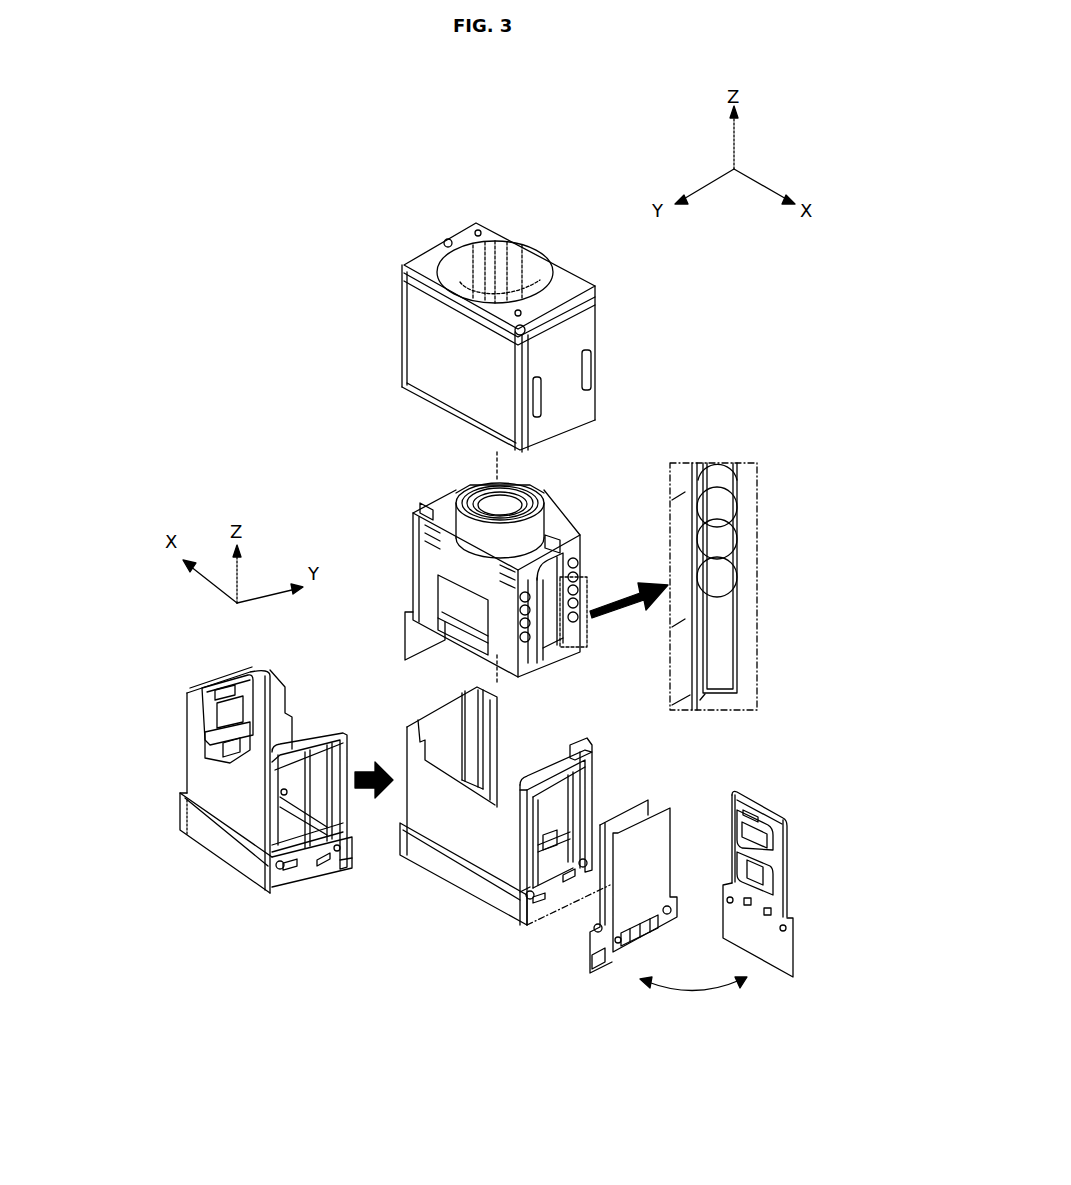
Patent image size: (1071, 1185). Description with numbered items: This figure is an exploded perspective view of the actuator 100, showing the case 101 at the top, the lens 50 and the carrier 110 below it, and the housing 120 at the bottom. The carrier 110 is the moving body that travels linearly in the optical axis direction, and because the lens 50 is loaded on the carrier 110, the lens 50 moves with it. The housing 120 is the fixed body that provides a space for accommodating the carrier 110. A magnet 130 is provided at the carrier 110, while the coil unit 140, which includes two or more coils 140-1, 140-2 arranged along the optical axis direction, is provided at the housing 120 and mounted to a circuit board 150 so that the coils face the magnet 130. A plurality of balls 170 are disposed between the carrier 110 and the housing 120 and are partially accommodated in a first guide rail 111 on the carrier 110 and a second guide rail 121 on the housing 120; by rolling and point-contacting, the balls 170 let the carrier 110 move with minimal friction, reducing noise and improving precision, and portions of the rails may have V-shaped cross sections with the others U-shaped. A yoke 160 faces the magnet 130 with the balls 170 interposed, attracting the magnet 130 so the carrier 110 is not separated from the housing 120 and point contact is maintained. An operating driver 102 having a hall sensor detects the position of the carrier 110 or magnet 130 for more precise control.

The actuator 100 is at (325, 210).
The case 101 is at (435, 388).
The carrier 110 is at (428, 578).
The lens 50 is at (513, 493).
The magnet 130 is at (557, 637).
The first guide rail 111 is at (715, 633).
The balls 170 is at (720, 538).
The housing 120 is at (253, 837).
The second guide rail 121 is at (210, 693).
The coil unit 140 is at (114, 712).
The coil 140-1 is at (210, 718).
The coil 140-2 is at (217, 747).
The circuit board 150 is at (192, 840).
The yoke 160 is at (665, 830).
The operating driver 102 is at (743, 840).